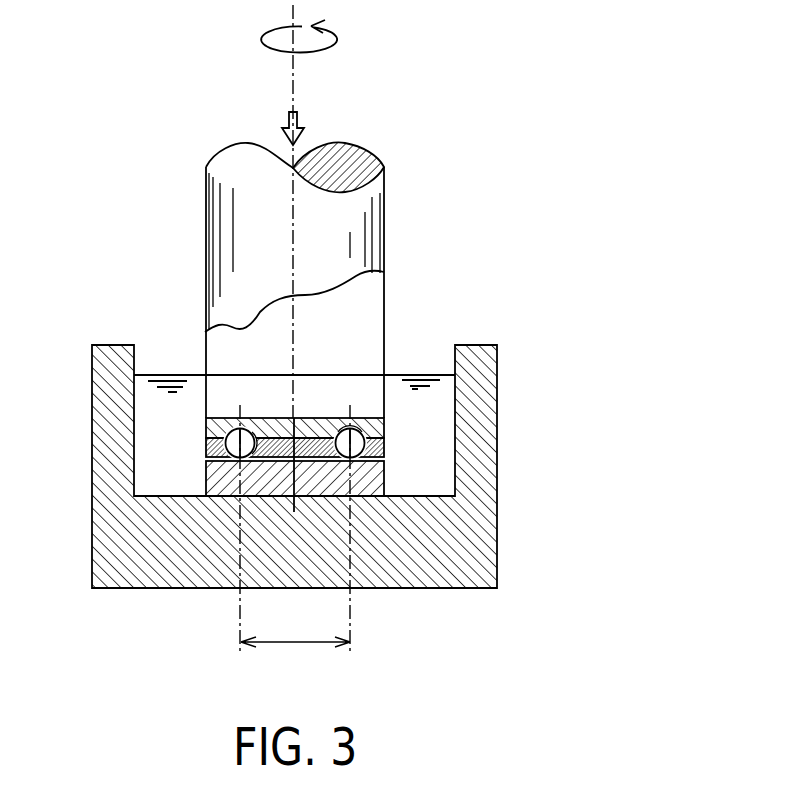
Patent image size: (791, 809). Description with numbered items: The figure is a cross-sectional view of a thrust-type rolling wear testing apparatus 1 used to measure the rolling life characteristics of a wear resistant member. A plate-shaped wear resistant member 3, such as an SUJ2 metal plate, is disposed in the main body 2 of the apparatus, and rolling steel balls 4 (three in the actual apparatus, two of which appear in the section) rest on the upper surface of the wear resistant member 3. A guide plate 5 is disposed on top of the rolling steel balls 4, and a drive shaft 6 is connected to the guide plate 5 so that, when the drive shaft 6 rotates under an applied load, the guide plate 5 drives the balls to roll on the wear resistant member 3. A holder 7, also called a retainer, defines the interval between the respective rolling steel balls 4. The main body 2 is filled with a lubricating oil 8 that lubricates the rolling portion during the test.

The thrust-type rolling wear testing apparatus 1 is at (429, 103).
The main body 2 is at (497, 357).
The plate-shaped wear resistant member 3 is at (384, 477).
The rolling steel balls 4 is at (226, 452).
The guide plate 5 is at (384, 427).
The drive shaft 6 is at (384, 210).
The holder 7 is at (384, 445).
The lubricating oil 8 is at (425, 374).